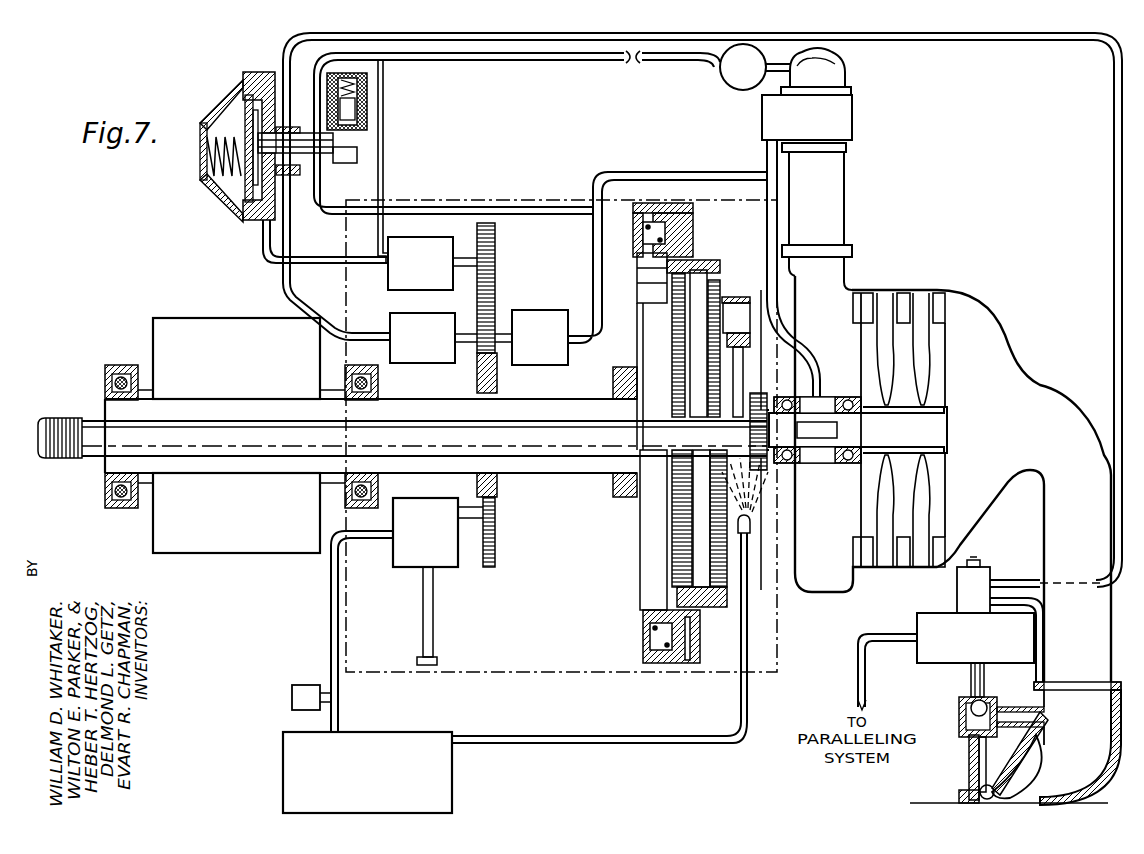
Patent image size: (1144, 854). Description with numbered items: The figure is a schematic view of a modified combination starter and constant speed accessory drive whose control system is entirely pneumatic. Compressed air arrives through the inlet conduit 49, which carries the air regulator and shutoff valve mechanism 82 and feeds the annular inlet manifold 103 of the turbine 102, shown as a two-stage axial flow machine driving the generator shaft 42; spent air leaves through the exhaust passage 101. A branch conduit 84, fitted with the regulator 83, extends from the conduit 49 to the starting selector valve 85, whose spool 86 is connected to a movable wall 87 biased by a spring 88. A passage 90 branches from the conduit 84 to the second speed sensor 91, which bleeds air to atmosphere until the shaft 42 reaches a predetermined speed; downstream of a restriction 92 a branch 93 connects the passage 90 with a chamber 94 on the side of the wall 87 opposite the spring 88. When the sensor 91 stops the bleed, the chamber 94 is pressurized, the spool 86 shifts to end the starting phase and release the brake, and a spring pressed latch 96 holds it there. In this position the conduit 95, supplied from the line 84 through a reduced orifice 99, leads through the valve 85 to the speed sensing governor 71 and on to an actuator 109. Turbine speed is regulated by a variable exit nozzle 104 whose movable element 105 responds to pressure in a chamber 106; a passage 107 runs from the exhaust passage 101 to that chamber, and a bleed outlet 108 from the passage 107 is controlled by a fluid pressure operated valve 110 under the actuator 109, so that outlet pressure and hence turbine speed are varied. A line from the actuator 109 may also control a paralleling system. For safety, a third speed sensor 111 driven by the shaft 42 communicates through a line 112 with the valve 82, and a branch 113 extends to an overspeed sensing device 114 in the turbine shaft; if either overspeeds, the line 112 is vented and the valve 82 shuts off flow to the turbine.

The generator shaft 42 is at (448, 397).
The inlet conduit 49 is at (836, 178).
The speed sensing governor 71 is at (434, 348).
The air regulator and shutoff valve mechanism 82 is at (845, 105).
The regulator 83 is at (720, 71).
The branch conduit 84 is at (432, 58).
The starting selector valve 85 is at (210, 114).
The spool 86 is at (335, 160).
The wall 87 is at (232, 198).
The spring 88 is at (206, 163).
The passage 90 is at (383, 160).
The second speed sensor 91 is at (432, 273).
The restriction 92 is at (376, 252).
The branch 93 is at (316, 272).
The chamber 94 is at (252, 98).
The conduit 95 is at (287, 50).
The spring pressed latch 96 is at (370, 122).
The reduced orifice 99 is at (641, 47).
The exhaust passage 101 is at (822, 594).
The turbine 102 is at (971, 294).
The annular inlet manifold 103 is at (1087, 674).
The variable exit nozzle 104 is at (968, 773).
The movable element 105 is at (1034, 764).
The chamber 106 is at (1038, 733).
The passage 107 is at (979, 757).
The bleed outlet 108 is at (971, 680).
The actuator 109 is at (934, 622).
The fluid pressure operated valve 110 is at (966, 700).
The third speed sensor 111 is at (552, 346).
The line 112 is at (595, 238).
The branch 113 is at (770, 207).
The overspeed sensing device 114 is at (836, 432).